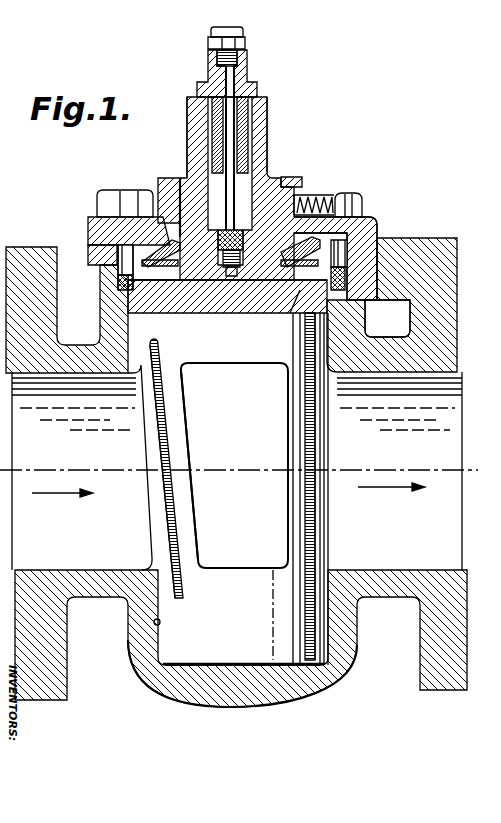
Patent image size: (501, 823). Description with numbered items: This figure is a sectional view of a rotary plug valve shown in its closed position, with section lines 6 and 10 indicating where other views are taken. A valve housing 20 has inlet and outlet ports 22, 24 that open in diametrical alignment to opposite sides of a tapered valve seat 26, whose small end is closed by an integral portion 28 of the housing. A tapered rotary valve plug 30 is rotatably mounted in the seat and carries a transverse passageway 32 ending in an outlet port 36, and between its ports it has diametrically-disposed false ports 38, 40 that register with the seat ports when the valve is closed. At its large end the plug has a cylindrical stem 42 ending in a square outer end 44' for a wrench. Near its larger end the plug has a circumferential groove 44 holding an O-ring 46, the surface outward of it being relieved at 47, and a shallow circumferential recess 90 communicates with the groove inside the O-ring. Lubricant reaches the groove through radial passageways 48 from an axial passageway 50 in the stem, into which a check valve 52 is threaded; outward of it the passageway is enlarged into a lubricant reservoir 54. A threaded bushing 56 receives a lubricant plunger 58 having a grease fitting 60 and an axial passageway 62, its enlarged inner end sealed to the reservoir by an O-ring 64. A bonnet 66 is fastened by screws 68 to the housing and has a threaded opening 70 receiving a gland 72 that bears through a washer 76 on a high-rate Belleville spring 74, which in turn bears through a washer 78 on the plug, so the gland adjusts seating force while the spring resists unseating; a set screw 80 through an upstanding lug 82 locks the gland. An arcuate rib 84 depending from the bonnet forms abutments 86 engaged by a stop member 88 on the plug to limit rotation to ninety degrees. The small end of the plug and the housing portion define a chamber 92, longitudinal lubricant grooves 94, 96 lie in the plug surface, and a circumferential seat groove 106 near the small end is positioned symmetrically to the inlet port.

The section line 6- 6 is at (478, 502).
The section line 10- 10 is at (130, 300).
The valve housing 20 is at (357, 630).
The inlet port 22 is at (100, 570).
The outlet port 24 is at (380, 570).
The tapered valve seat 26 is at (150, 652).
The integral portion 28 is at (280, 702).
The tapered rotary valve plug 30 is at (200, 648).
The transverse passageway 32 is at (226, 446).
The outlet port 36 is at (183, 410).
The false port 38 is at (160, 516).
The false port 40 is at (320, 508).
The cylindrical stem 42 is at (296, 185).
The circumferential groove 44 is at (369, 249).
The square outer end 44' is at (255, 135).
The O-ring 46 is at (344, 285).
The relieved surface 47 is at (378, 224).
The radial passageways 48 is at (202, 285).
The axial passageway 50 is at (237, 291).
The check valve 52 is at (256, 284).
The lubricant reservoir 54 is at (190, 238).
The bushing 56 is at (257, 88).
The lubricant plunger 58 is at (243, 158).
The grease fitting 60 is at (247, 41).
The axial passageway 62 is at (232, 169).
The O-ring 64 is at (186, 182).
The bonnet 66 is at (90, 225).
The screws 68 is at (100, 200).
The central threaded opening 70 is at (100, 250).
The gland 72 is at (301, 181).
The Belleville spring 74 is at (165, 282).
The washer 76 is at (360, 218).
The washer 78 is at (300, 290).
The set screw 80 is at (350, 194).
The upstanding lug 82 is at (318, 197).
The arcuate rib 84 is at (370, 220).
The abutments 86 is at (112, 258).
The stop member 88 is at (118, 263).
The circumferential recess 90 is at (387, 317).
The chamber 92 is at (228, 676).
The lubricant groove 94 is at (311, 457).
The lubricant groove 96 is at (160, 457).
The seat groove 106 is at (160, 622).